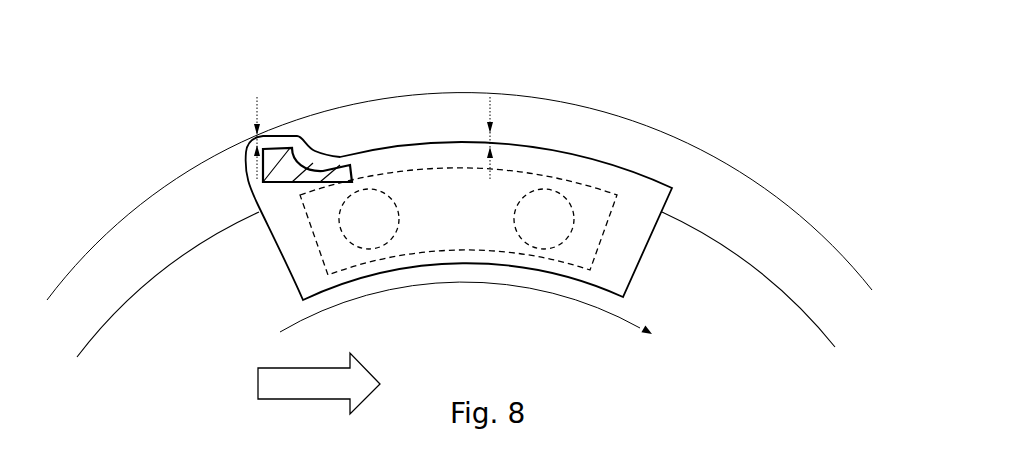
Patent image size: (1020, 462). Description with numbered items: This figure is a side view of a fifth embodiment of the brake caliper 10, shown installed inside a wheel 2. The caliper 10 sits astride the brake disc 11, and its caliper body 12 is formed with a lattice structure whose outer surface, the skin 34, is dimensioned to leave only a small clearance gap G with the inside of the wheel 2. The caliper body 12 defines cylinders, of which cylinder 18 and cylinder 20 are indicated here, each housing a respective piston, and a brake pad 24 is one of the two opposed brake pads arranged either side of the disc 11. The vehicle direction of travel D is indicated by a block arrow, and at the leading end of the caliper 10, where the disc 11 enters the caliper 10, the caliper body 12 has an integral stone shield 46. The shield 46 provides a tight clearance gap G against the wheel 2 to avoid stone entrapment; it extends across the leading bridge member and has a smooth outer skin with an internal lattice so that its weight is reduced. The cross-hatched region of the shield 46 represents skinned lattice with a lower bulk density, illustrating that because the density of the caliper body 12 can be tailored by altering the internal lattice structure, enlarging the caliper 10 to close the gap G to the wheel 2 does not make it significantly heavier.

The wheel 2 is at (312, 117).
The brake caliper 10 is at (459, 226).
The brake disc 11 is at (466, 316).
The caliper body 12 is at (635, 185).
The cylinder 18 is at (303, 148).
The cylinder 20 is at (548, 197).
The brake pad 24 is at (465, 178).
The skin 34 is at (412, 158).
The stone shield 46 is at (272, 143).